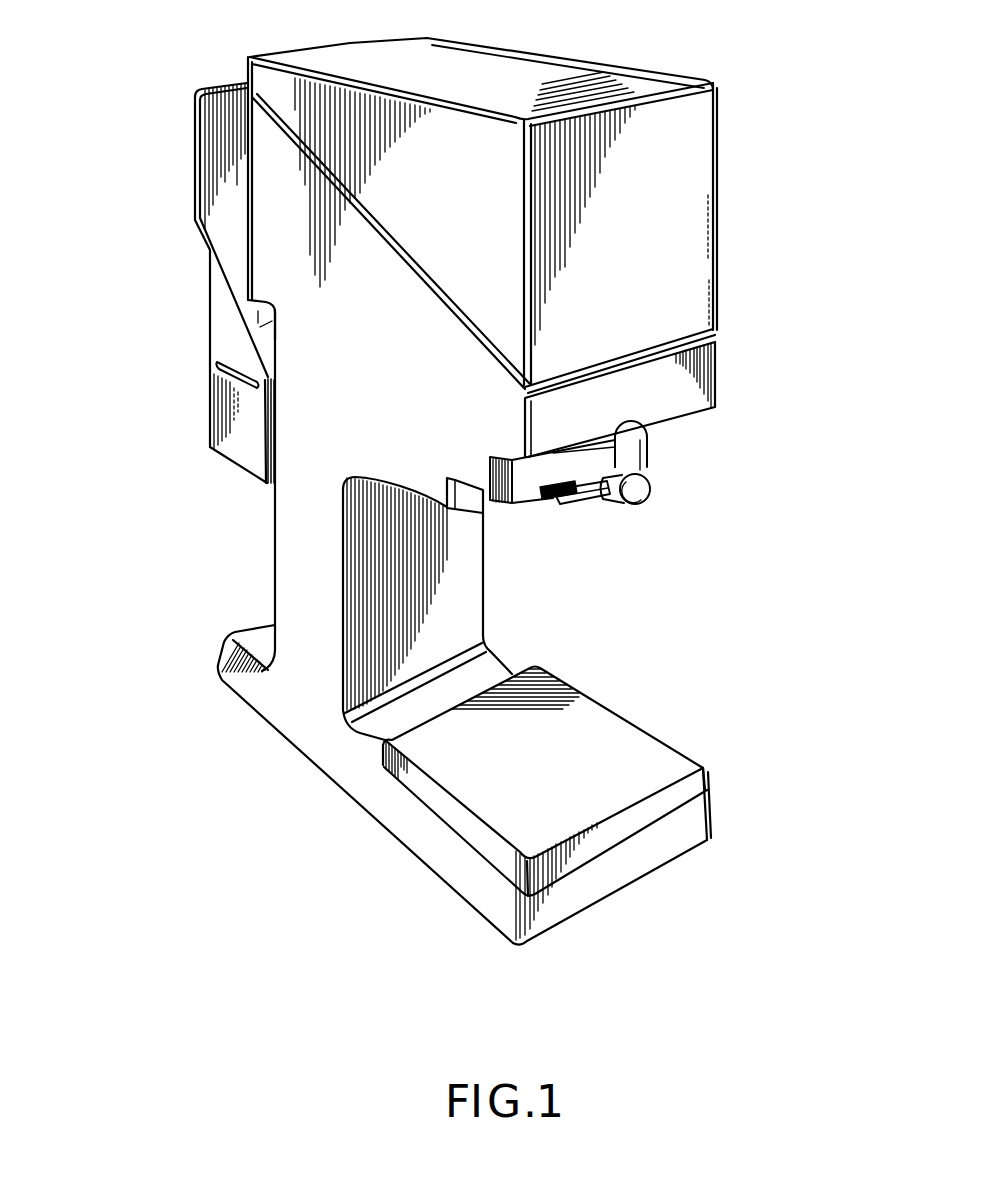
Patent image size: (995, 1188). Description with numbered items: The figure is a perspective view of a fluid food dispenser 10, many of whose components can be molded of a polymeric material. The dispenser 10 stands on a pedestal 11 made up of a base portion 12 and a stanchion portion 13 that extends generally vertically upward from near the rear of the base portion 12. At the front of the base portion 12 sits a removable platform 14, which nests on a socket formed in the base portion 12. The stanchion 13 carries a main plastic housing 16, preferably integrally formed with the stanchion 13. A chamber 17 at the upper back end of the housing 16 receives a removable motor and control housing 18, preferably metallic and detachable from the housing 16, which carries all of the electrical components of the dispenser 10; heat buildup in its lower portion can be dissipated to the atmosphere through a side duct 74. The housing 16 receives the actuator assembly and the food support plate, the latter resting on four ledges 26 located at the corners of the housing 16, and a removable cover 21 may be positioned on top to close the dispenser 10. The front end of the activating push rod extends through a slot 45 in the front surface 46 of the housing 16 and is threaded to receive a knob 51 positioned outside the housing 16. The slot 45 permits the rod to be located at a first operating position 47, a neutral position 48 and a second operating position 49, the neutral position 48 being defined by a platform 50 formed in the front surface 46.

The fluid food dispenser 10 is at (732, 87).
The pedestal 11 is at (504, 649).
The base portion 12 is at (416, 830).
The stanchion portion 13 is at (297, 488).
The removable platform 14 is at (640, 750).
The main plastic housing 16 is at (720, 360).
The chamber 17 is at (208, 175).
The motor and control housing 18 is at (245, 418).
The removable cover 21 is at (692, 178).
The ledges 26 is at (258, 330).
The slot 45 is at (610, 446).
The front surface 46 is at (522, 485).
The first operating position 47 is at (553, 495).
The neutral position 48 is at (590, 494).
The second operating position 49 is at (658, 472).
The platform 50 is at (640, 430).
The knob 51 is at (653, 484).
The side duct 74 is at (213, 360).